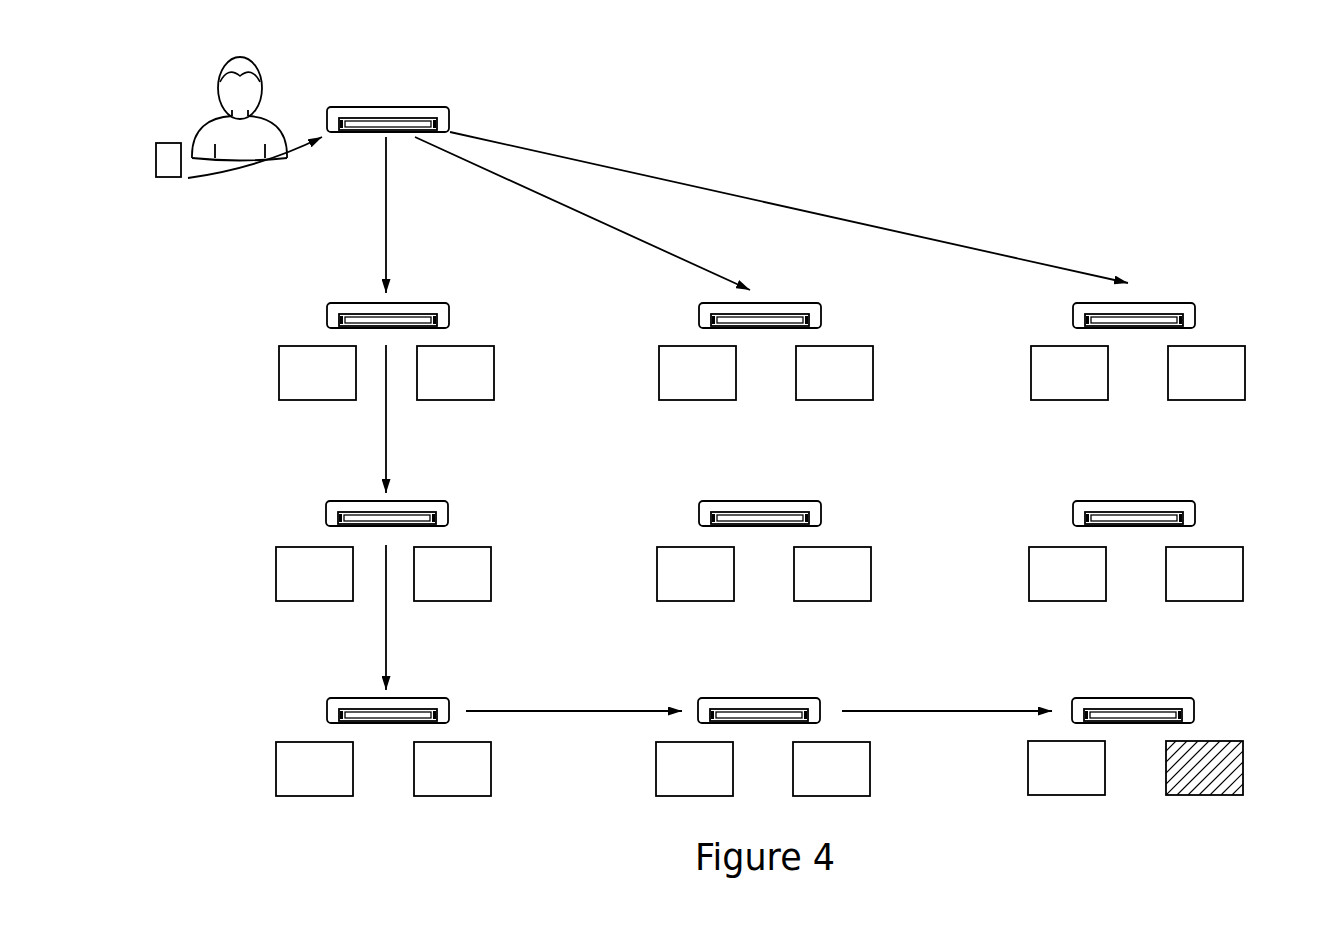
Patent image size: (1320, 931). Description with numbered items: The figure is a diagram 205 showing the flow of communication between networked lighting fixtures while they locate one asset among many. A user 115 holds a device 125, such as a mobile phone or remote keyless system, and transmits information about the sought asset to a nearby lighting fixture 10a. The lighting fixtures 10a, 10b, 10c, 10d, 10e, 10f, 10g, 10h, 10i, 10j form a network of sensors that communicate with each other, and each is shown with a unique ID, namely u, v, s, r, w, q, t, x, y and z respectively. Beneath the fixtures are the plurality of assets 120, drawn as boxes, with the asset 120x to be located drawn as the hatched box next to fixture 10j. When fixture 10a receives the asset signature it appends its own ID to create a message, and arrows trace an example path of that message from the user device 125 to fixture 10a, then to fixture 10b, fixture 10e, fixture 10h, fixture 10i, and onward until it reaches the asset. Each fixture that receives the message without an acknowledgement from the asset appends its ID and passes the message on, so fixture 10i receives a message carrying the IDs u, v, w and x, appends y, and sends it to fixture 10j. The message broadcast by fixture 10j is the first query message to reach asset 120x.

The network system 205 is at (968, 75).
The user 115 is at (255, 62).
The device 125 is at (165, 143).
The lighting fixture 10a is at (437, 107).
The lighting fixture 10b is at (437, 303).
The lighting fixture 10c is at (797, 303).
The lighting fixture 10d is at (1166, 303).
The lighting fixture 10e is at (436, 501).
The lighting fixture 10f is at (797, 501).
The lighting fixture 10g is at (1166, 501).
The lighting fixture 10h is at (427, 698).
The lighting fixture 10i is at (787, 698).
The lighting fixture 10j is at (1155, 698).
The assets 120 is at (1082, 778).
The asset 120x is at (1225, 741).